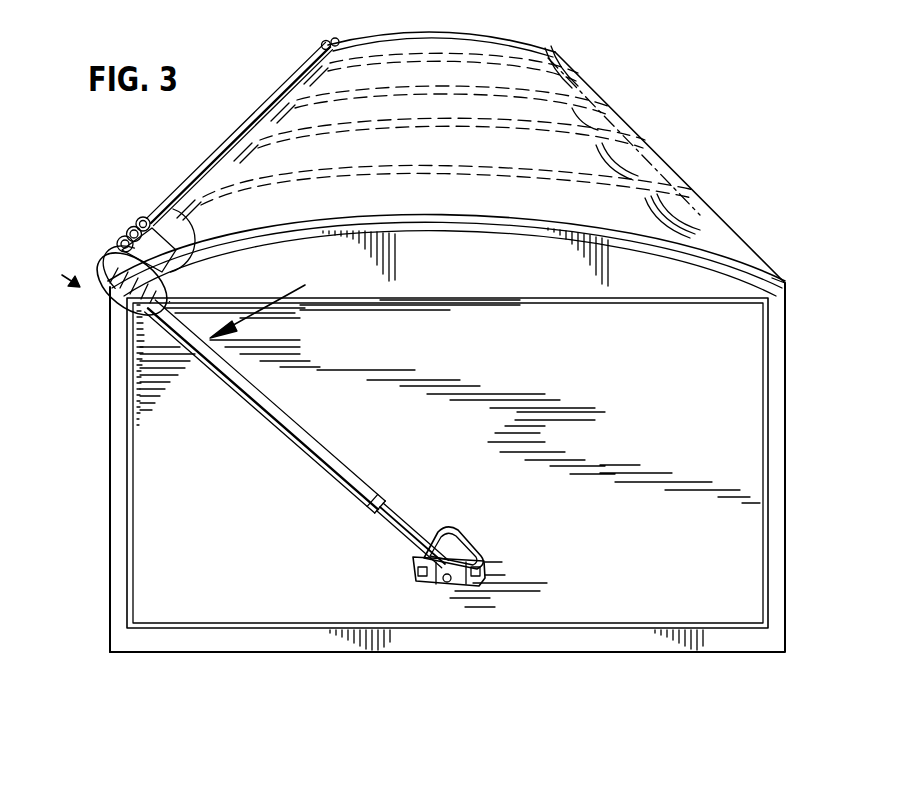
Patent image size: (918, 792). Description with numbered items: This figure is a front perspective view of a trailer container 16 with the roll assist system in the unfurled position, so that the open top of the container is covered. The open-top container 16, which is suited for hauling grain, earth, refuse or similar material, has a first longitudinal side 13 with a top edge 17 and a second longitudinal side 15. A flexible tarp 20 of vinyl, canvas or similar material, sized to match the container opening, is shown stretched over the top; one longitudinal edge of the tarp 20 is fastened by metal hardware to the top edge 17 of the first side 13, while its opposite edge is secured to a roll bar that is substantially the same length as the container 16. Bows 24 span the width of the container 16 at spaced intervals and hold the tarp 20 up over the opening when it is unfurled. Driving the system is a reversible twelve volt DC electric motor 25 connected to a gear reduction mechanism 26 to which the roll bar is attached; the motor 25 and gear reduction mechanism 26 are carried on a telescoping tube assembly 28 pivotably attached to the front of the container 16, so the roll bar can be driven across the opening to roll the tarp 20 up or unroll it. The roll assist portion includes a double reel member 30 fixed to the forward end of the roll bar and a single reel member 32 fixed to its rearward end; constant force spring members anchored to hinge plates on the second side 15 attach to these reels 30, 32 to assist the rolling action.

The first longitudinal side 13 is at (787, 527).
The second longitudinal side 15 is at (109, 512).
The open-top container 16 is at (746, 406).
The top edge 17 is at (788, 280).
The tarp 20 is at (607, 127).
The bows 24 is at (630, 143).
The electric motor 25 is at (177, 230).
The gear reduction mechanism 26 is at (83, 262).
The telescoping tube assembly 28 is at (290, 440).
The double reel member 30 is at (127, 240).
The single reel member 32 is at (322, 44).